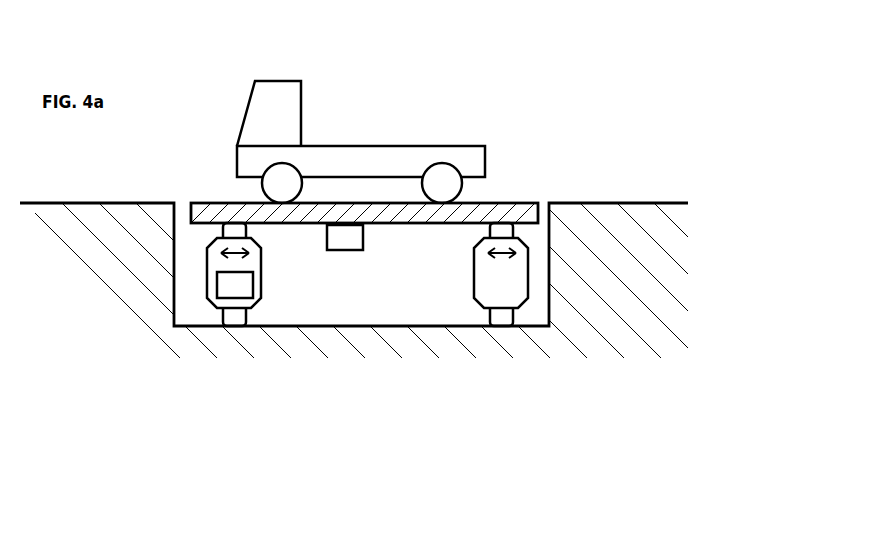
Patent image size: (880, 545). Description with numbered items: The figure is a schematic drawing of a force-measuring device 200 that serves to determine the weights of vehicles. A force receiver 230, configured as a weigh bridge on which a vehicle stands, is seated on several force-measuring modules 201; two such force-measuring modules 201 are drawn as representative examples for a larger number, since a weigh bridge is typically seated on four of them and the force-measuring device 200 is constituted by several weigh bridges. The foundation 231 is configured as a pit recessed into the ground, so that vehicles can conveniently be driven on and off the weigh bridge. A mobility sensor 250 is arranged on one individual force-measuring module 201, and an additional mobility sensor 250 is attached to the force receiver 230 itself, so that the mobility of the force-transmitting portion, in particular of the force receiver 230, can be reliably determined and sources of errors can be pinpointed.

The force-measuring device 200 is at (112, 412).
The force-measuring module 201 is at (220, 306).
The force receiver 230 is at (512, 203).
The foundation 231 is at (455, 351).
The mobility sensor 250 is at (248, 303).